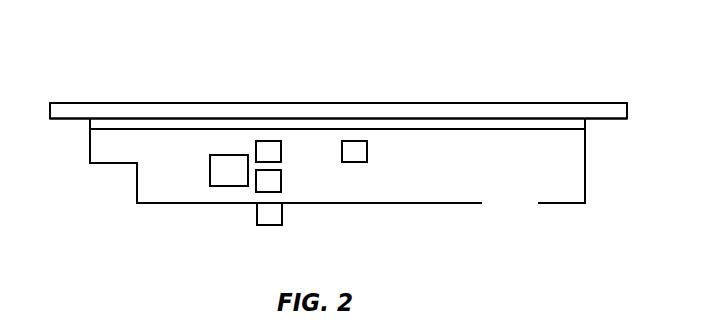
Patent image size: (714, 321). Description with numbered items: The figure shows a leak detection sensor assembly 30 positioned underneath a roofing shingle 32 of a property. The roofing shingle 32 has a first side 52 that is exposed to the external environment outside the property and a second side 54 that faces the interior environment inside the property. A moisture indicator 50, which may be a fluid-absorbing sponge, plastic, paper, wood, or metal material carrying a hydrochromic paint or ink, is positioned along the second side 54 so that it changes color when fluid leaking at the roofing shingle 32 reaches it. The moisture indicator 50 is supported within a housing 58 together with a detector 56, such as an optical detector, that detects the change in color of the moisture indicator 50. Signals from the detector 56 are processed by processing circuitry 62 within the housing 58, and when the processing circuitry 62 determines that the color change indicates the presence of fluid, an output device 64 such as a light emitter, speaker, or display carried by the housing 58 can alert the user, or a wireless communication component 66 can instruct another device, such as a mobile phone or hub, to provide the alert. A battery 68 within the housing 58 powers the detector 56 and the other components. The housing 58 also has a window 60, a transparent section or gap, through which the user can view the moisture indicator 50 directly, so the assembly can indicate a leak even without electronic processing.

The leak detection sensor assembly 30 is at (530, 62).
The roofing shingle 32 is at (312, 103).
The moisture indicator 50 is at (422, 129).
The first side 52 is at (560, 103).
The second side 54 is at (607, 119).
The detector 56 is at (210, 165).
The housing 58 is at (585, 172).
The window 60 is at (507, 203).
The processing circuitry 62 is at (281, 157).
The output device 64 is at (268, 226).
The wireless communication component 66 is at (281, 181).
The battery 68 is at (367, 157).